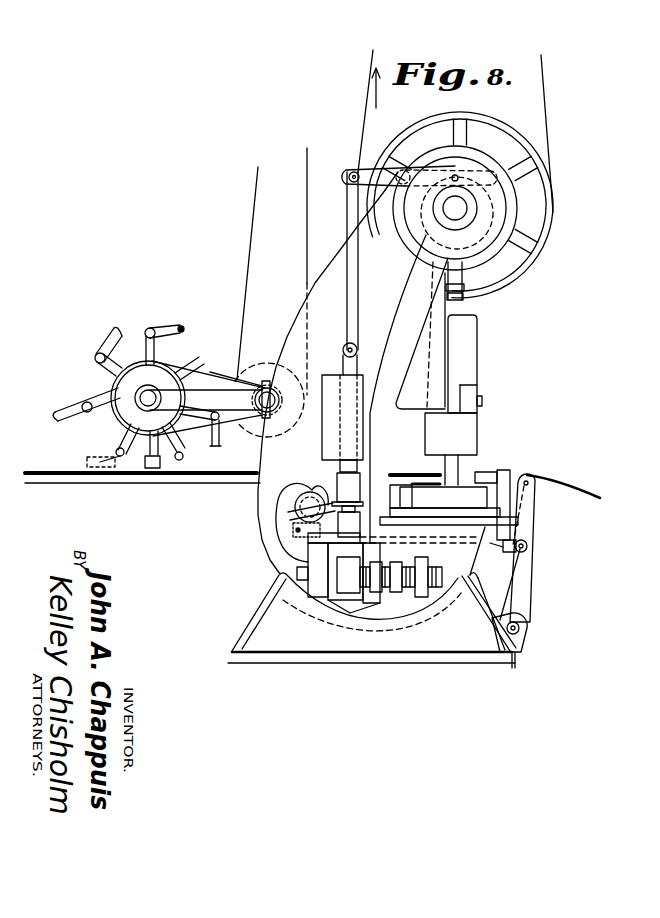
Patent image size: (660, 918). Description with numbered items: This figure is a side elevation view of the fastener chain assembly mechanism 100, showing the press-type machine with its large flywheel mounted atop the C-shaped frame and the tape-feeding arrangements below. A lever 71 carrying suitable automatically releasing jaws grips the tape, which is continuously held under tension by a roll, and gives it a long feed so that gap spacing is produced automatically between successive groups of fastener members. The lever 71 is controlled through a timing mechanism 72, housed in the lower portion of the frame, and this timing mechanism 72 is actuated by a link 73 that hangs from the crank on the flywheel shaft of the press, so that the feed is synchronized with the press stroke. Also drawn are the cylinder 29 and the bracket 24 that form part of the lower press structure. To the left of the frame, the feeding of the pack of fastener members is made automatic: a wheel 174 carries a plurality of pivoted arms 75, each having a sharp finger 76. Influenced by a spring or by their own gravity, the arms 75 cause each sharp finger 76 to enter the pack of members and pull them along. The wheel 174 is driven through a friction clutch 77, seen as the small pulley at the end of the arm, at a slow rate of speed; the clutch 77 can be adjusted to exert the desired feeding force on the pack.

The link 73 is at (355, 290).
The fastener chain assembly mechanism 100 is at (434, 340).
The cylinder 29 is at (464, 368).
The lever 71 is at (528, 527).
The bracket 24 is at (461, 560).
The timing mechanism 72 is at (345, 602).
The friction clutch 77 is at (267, 394).
The wheel 174 is at (126, 415).
The sharp finger 76 is at (119, 333).
The pivoted arms 75 is at (70, 412).